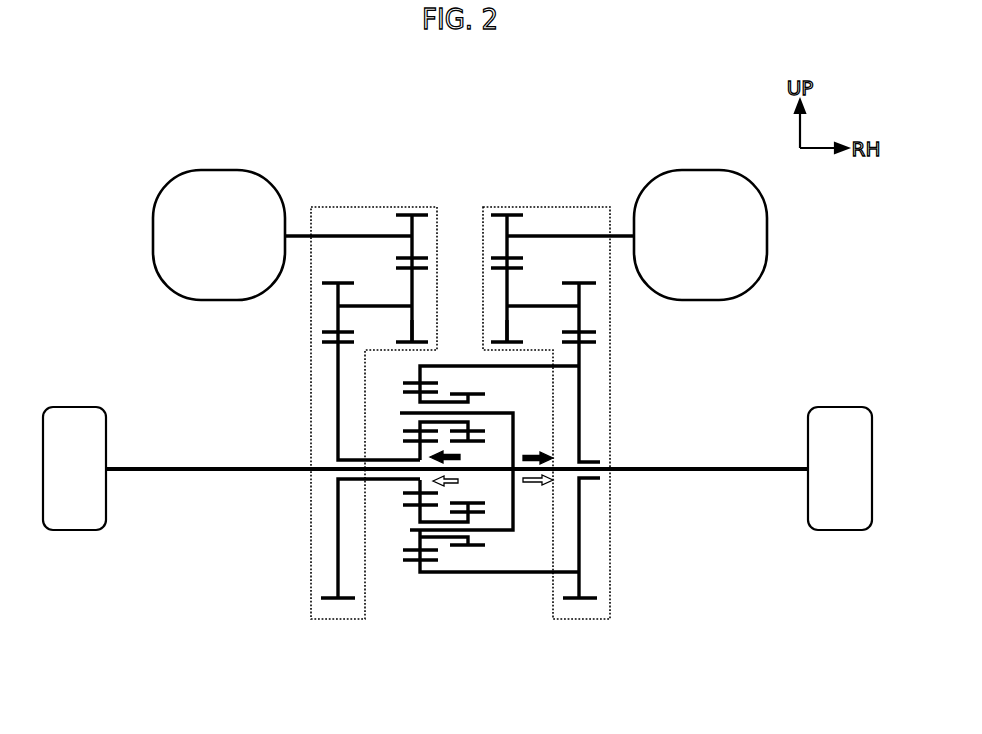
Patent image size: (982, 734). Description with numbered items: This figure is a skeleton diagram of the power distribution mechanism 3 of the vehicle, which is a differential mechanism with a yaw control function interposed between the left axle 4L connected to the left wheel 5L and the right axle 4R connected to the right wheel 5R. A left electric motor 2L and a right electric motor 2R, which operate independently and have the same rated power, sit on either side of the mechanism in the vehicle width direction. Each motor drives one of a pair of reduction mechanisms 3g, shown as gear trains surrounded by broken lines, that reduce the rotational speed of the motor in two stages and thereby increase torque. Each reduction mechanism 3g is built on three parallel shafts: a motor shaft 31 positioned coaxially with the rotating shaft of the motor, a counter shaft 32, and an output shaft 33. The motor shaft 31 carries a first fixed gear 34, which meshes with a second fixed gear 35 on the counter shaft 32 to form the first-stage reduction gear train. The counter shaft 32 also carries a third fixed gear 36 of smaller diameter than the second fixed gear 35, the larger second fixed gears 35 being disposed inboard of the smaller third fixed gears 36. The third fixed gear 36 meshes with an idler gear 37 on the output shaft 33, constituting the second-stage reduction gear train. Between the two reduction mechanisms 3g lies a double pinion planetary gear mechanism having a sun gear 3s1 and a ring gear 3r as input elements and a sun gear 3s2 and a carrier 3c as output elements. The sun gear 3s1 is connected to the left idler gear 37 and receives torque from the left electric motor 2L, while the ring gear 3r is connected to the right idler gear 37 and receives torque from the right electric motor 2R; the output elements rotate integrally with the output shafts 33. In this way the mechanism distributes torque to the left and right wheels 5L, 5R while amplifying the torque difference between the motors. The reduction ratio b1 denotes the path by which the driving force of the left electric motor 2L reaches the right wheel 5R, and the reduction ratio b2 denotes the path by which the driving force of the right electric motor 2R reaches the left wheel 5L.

The left electric motor 2L is at (190, 300).
The right electric motor 2R is at (738, 300).
The power distribution mechanism 3 is at (404, 630).
The reduction mechanism 3g is at (333, 621).
The ring gear 3r is at (418, 573).
The carrier 3c is at (493, 532).
The sun gear 3s1 is at (418, 490).
The sun gear 3s2 is at (485, 440).
The motor shaft 31 is at (318, 232).
The counter shaft 32 is at (363, 305).
The output shaft 33 is at (383, 466).
The first fixed gear 34 is at (405, 212).
The second fixed gear 35 is at (412, 316).
The third fixed gear 36 is at (333, 318).
The idler gear 37 is at (335, 582).
The left axle 4L is at (174, 475).
The right axle 4R is at (745, 475).
The left wheel 5L is at (75, 532).
The right wheel 5R is at (840, 532).
The reduction ratio b1 is at (550, 457).
The reduction ratio b2 is at (446, 489).